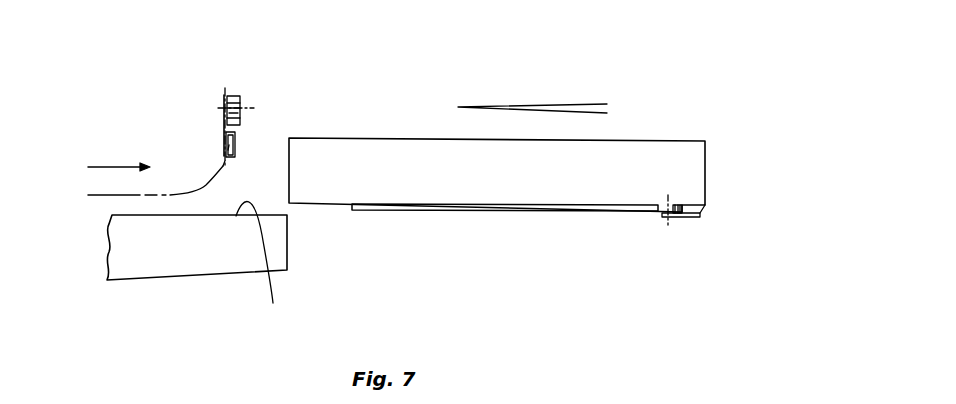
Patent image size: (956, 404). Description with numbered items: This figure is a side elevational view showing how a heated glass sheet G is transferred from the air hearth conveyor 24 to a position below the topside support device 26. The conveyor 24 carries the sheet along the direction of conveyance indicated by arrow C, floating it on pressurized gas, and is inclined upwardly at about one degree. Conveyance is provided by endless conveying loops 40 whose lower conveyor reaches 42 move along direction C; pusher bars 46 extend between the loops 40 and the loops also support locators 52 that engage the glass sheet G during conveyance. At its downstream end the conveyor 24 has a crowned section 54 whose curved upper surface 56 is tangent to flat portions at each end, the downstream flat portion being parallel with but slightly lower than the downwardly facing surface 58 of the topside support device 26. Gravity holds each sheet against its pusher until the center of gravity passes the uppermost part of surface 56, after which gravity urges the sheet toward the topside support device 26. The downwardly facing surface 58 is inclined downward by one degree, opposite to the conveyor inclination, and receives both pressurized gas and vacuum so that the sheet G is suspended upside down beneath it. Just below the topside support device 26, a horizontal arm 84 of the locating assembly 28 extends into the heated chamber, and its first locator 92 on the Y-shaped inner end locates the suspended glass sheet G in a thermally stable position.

The air hearth conveyor 24 is at (237, 280).
The topside support device 26 is at (656, 135).
The locating assembly 28 is at (706, 214).
The endless conveying loops 40 is at (203, 178).
The lower conveyor reaches 42 is at (107, 195).
The pusher bars 46 is at (226, 140).
The locators 52 is at (240, 98).
The crowned section 54 is at (181, 257).
The upper surface 56 is at (262, 273).
The downwardly facing surface 58 is at (585, 213).
The horizontal arms 84 is at (688, 218).
The first locator 92 is at (658, 212).
The direction of conveyance C is at (108, 167).
The glass sheet G is at (413, 212).